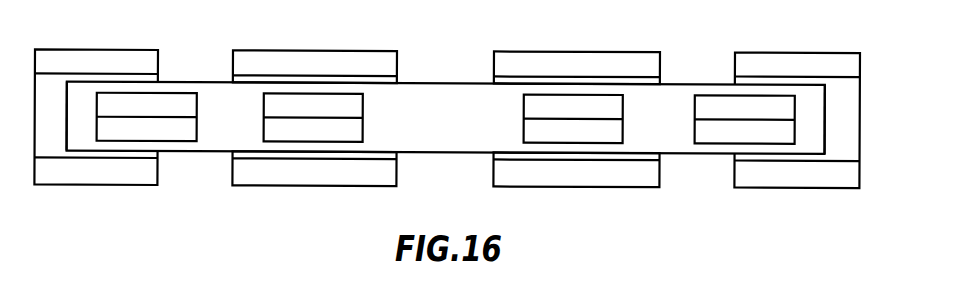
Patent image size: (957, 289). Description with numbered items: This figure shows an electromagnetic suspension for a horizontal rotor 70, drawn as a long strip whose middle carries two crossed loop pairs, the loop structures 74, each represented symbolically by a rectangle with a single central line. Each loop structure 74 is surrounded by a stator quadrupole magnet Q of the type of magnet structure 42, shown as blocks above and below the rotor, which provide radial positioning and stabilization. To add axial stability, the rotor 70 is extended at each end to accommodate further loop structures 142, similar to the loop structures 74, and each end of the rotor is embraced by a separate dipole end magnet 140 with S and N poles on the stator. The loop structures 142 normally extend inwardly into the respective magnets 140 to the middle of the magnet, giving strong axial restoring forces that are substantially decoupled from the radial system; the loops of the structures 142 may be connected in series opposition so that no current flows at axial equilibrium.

The rotor 70 is at (438, 146).
The loop structures 74 is at (372, 106).
The quadrupole magnet structure 42 is at (352, 58).
The dipole end magnets 140 is at (132, 57).
The loop structures 142 is at (64, 142).